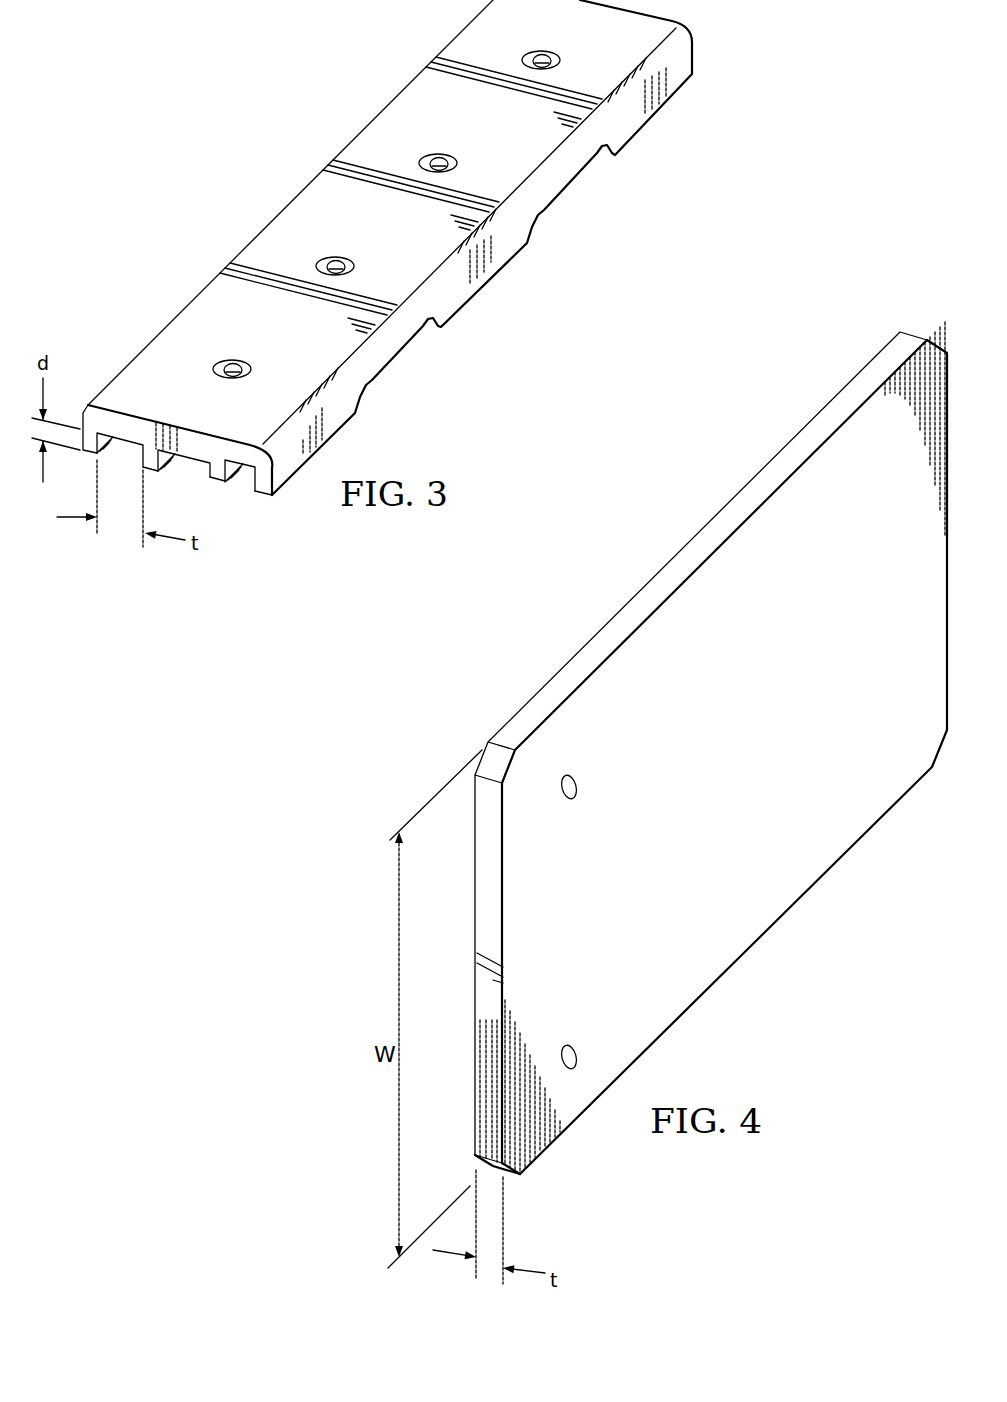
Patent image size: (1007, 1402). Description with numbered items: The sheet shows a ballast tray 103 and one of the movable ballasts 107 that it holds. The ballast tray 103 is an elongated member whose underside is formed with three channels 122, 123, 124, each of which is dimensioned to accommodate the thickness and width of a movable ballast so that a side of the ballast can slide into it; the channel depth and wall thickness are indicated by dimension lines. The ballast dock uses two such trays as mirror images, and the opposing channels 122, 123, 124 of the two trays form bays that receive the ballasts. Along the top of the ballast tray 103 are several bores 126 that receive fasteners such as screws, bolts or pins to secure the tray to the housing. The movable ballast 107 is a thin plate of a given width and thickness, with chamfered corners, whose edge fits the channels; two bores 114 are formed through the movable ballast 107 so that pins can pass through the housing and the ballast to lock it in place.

In FIG. 3, the ballast tray 103 is at (246, 125).
In FIG. 3, the channel 122 is at (127, 444).
In FIG. 3, the channel 123 is at (192, 460).
In FIG. 3, the channel 124 is at (242, 470).
In FIG. 3, the bore 126 is at (234, 365).
In FIG. 4, the movable ballast 107 is at (702, 547).
In FIG. 4, the bore 114 is at (578, 781).